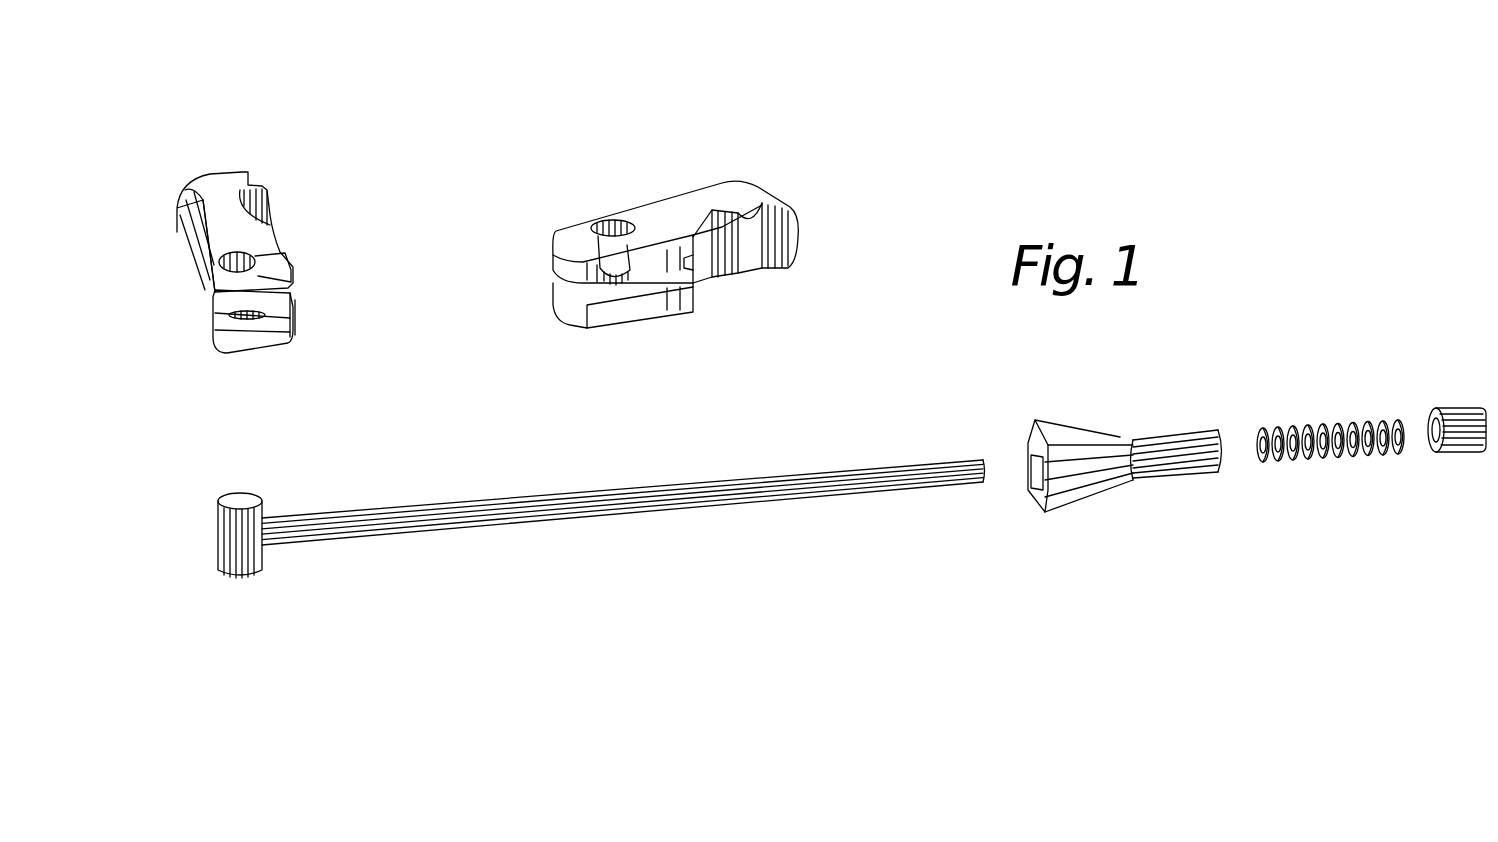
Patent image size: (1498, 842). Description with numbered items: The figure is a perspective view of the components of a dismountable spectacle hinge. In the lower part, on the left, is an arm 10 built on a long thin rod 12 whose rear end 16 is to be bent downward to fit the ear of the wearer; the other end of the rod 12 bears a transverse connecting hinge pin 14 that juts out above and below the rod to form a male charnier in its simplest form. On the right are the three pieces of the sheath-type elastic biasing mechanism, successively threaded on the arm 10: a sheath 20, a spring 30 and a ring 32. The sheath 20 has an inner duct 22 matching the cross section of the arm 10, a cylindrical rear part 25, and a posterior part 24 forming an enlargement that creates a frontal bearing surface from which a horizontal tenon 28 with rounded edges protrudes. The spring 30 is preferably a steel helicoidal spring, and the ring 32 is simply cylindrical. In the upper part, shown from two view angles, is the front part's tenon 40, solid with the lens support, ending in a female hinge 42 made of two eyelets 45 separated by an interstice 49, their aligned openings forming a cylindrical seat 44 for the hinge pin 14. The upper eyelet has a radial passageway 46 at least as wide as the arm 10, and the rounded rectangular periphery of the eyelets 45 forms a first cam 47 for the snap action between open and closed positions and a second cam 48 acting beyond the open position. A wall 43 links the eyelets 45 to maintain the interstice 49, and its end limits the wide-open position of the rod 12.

The arm 10 is at (699, 525).
The rod 12 is at (317, 550).
The hinge pin 14 is at (254, 585).
The rear end 16 is at (956, 495).
The sheath 20 is at (1119, 517).
The inner duct 22 is at (1022, 470).
The posterior part 24 is at (1067, 490).
The rear part 25 is at (1172, 484).
The horizontal tenon 28 is at (1032, 489).
The spring 30 is at (1306, 470).
The ring 32 is at (1449, 463).
The front part's tenon 40 is at (221, 185).
The female hinge 42 is at (314, 272).
The wall 43 is at (209, 324).
The cylindrical seat 44 is at (253, 272).
The eyelets 45 is at (237, 300).
The radial passageway 46 is at (278, 258).
The first cam 47 is at (297, 345).
The second cam 48 is at (206, 300).
The interstice 49 is at (599, 297).